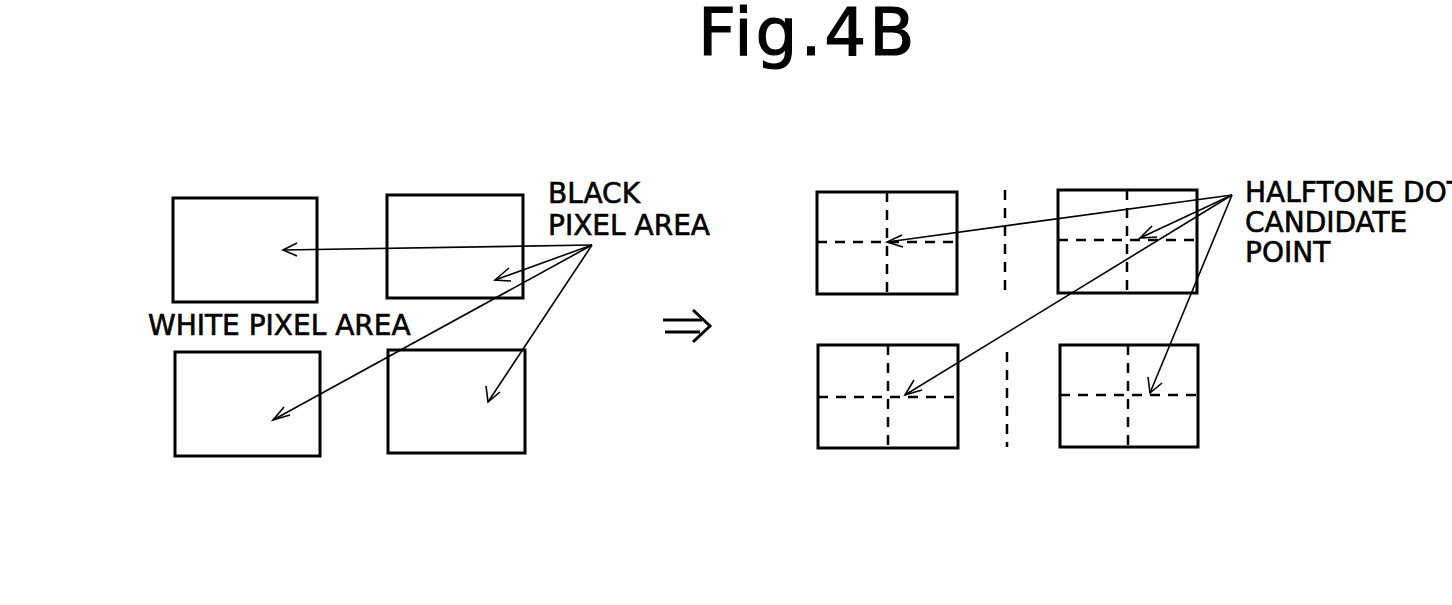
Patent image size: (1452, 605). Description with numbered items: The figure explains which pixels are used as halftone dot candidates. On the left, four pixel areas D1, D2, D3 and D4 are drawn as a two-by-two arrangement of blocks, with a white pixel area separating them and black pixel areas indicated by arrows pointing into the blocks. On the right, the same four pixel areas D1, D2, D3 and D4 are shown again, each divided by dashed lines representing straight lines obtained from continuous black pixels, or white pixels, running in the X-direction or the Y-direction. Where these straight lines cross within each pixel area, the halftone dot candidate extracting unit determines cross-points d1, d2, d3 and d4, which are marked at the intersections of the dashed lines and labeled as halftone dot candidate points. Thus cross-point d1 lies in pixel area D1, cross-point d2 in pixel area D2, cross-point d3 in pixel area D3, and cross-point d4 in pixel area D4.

The pixel area D1 is at (245, 250).
The pixel area D2 is at (455, 246).
The pixel area D3 is at (456, 401).
The pixel area D4 is at (247, 404).
The cross-point d1 is at (886, 240).
The cross-point d2 is at (1126, 242).
The cross-point d3 is at (1128, 395).
The cross-point d4 is at (888, 397).